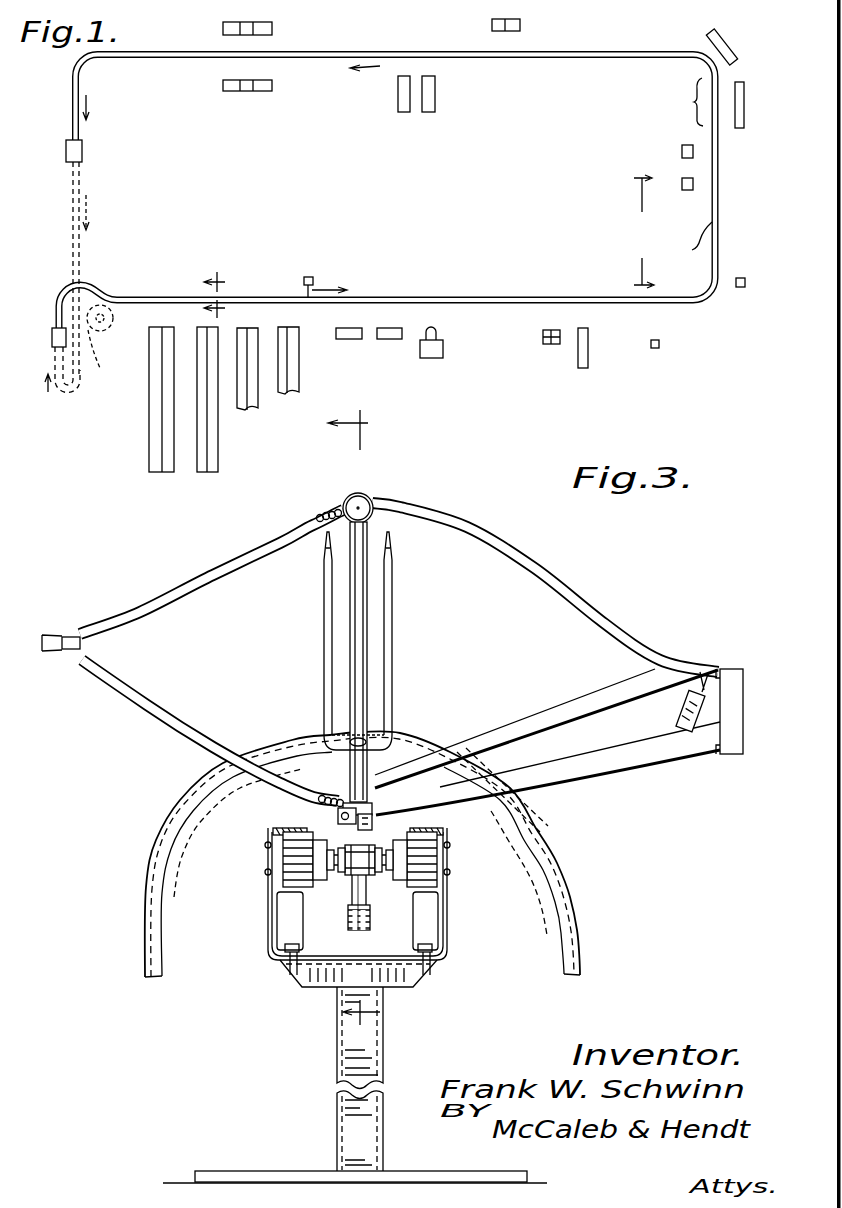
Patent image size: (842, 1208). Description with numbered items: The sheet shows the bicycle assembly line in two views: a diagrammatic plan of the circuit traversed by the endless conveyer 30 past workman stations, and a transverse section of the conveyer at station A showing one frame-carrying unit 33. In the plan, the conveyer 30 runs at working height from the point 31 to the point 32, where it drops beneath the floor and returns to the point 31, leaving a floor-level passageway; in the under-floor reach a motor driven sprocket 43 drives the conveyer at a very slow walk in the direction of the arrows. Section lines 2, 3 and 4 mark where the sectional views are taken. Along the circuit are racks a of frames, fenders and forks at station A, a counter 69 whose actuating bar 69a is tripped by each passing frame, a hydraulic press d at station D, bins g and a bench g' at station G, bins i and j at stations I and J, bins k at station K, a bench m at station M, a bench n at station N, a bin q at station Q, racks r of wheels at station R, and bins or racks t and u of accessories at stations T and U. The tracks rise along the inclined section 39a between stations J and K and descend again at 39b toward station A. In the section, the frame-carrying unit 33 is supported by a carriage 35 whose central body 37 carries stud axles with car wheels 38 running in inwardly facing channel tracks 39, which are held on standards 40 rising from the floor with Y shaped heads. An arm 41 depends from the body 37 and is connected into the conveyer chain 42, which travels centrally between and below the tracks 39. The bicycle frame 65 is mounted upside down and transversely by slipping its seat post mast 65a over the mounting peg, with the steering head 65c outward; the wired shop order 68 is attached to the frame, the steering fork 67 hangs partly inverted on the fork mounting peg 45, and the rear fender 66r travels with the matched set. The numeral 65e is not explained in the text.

In FIG. 1, the endless conveyer 30 is at (152, 300).
In FIG. 3, the endless conveyer 30 is at (441, 924).
In FIG. 1, the point 31 is at (50, 340).
In FIG. 1, the point 32 is at (84, 155).
In FIG. 1, the motor driven sprocket 43 is at (101, 341).
In FIG. 1, the counter 69 is at (312, 277).
In FIG. 1, the actuating bar 69a is at (306, 300).
In FIG. 1, the inclined section 39a is at (686, 238).
In FIG. 1, the descending section 39b is at (692, 102).
In FIG. 1, the section line 2 is at (632, 235).
In FIG. 1, the section line 3 is at (214, 294).
In FIG. 1, the section line 4 is at (382, 433).
In FIG. 3, the section line 4 is at (398, 1019).
In FIG. 1, the racks a is at (200, 472).
In FIG. 1, the bins or racks u is at (250, 22).
In FIG. 1, the bins or racks t is at (247, 91).
In FIG. 1, the racks r is at (420, 110).
In FIG. 1, the bin q is at (520, 20).
In FIG. 1, the bench n is at (733, 48).
In FIG. 1, the workman's bench m is at (744, 123).
In FIG. 1, the bins k is at (681, 184).
In FIG. 1, the bins j is at (745, 283).
In FIG. 1, the hydraulic press d is at (432, 358).
In FIG. 1, the bins g is at (555, 350).
In FIG. 1, the bench g' is at (593, 350).
In FIG. 1, the bins i is at (660, 348).
In FIG. 3, the bicycle frame 65 is at (578, 600).
In FIG. 3, the seat post mast 65a is at (355, 656).
In FIG. 3, the steering head 65c is at (370, 498).
In FIG. 3, the rear plate 65e is at (745, 683).
In FIG. 3, the steering fork 67 is at (395, 728).
In FIG. 3, the wired shop order 68 is at (678, 716).
In FIG. 3, the fork mounting peg 45 is at (478, 771).
In FIG. 3, the frame-carrying unit 33 is at (338, 793).
In FIG. 3, the carriage 35 is at (372, 880).
In FIG. 3, the central body 37 is at (372, 848).
In FIG. 3, the car wheel 38 is at (292, 849).
In FIG. 3, the channel track 39 is at (445, 884).
In FIG. 3, the arm 41 is at (376, 925).
In FIG. 3, the conveyer chain 42 is at (350, 925).
In FIG. 3, the standard 40 is at (383, 1068).
In FIG. 3, the rear fender 66r is at (565, 870).